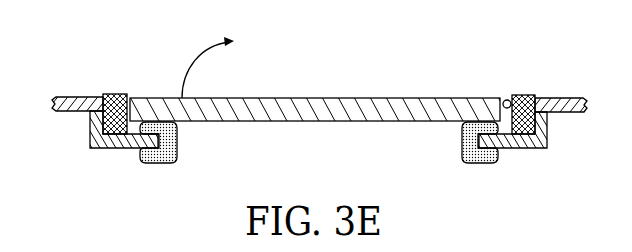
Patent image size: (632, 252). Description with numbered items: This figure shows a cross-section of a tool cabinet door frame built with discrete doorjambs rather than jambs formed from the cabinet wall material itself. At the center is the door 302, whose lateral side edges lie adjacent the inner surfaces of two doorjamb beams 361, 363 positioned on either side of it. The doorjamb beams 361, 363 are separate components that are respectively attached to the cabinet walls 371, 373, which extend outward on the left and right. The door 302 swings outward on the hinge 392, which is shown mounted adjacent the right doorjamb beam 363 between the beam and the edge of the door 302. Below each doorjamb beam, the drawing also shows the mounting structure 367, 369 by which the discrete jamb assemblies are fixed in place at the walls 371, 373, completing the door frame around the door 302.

The door 302 is at (342, 108).
The doorjamb beam 361 is at (115, 94).
The doorjamb beam 363 is at (527, 95).
The left bracket 367 is at (115, 149).
The right bracket 369 is at (518, 149).
The wall 371 is at (67, 112).
The wall 373 is at (573, 113).
The hinge 392 is at (505, 98).